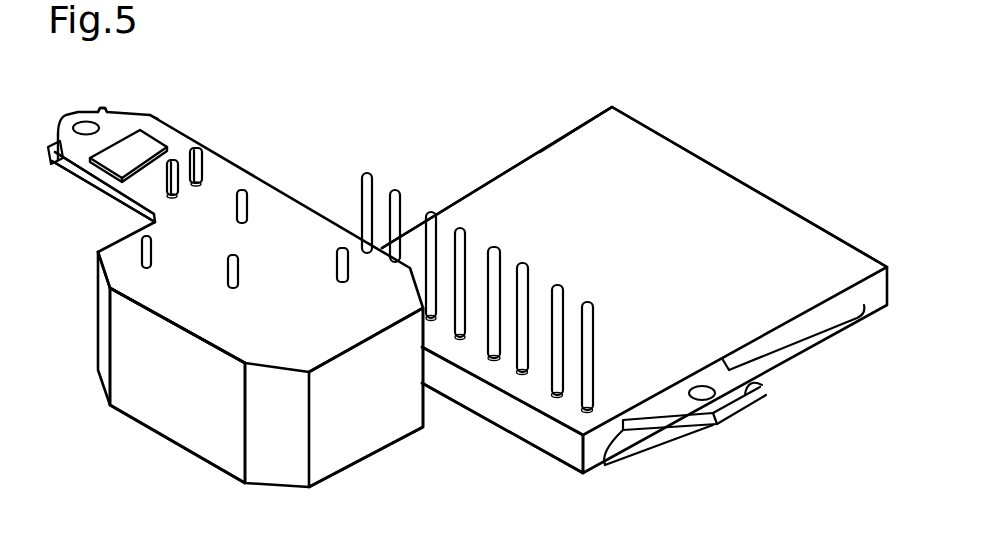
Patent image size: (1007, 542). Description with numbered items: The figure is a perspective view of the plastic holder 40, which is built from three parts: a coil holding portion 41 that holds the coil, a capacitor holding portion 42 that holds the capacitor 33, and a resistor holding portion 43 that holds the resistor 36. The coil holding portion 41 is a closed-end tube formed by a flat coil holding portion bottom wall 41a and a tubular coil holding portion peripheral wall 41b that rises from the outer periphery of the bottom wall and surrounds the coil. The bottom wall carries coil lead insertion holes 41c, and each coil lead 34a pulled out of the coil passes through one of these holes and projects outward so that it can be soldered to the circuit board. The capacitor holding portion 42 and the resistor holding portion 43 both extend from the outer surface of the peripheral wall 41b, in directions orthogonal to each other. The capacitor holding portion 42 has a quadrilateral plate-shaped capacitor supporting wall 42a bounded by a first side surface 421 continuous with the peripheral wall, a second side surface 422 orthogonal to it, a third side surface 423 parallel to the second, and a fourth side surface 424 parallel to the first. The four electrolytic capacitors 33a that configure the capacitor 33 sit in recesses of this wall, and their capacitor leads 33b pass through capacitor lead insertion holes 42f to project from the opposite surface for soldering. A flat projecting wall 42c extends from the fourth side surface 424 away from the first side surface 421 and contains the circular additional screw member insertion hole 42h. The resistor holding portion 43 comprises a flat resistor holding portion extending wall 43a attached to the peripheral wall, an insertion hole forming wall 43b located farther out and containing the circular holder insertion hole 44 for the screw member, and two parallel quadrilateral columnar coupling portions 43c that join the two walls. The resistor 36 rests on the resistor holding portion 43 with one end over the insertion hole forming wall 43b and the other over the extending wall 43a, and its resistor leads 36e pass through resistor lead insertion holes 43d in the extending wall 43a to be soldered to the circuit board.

The capacitor 33 is at (630, 474).
The electrolytic capacitor 33a is at (668, 438).
The capacitor lead 33b is at (462, 226).
The coil lead 34a is at (338, 248).
The resistor 36 is at (122, 150).
The resistor lead 36e is at (197, 150).
The holder 40 is at (280, 118).
The coil holding portion 41 is at (110, 408).
The coil holding portion bottom wall 41a is at (332, 355).
The coil holding portion peripheral wall 41b is at (192, 442).
The coil lead insertion hole 41c is at (150, 268).
The capacitor holding portion 42 is at (660, 136).
The capacitor supporting wall 42a is at (580, 127).
The projecting wall 42c is at (750, 397).
The capacitor lead insertion hole 42f is at (515, 365).
The additional screw member insertion hole 42h is at (720, 405).
The first side surface 421 is at (516, 165).
The second side surface 422 is at (502, 415).
The third side surface 423 is at (736, 179).
The fourth side surface 424 is at (807, 327).
The resistor holding portion 43 is at (57, 160).
The resistor holding portion extending wall 43a is at (137, 187).
The insertion hole forming wall 43b is at (103, 108).
The coupling portion 43c is at (160, 118).
The resistor lead insertion hole 43d is at (197, 188).
The holder insertion hole 44 is at (73, 126).